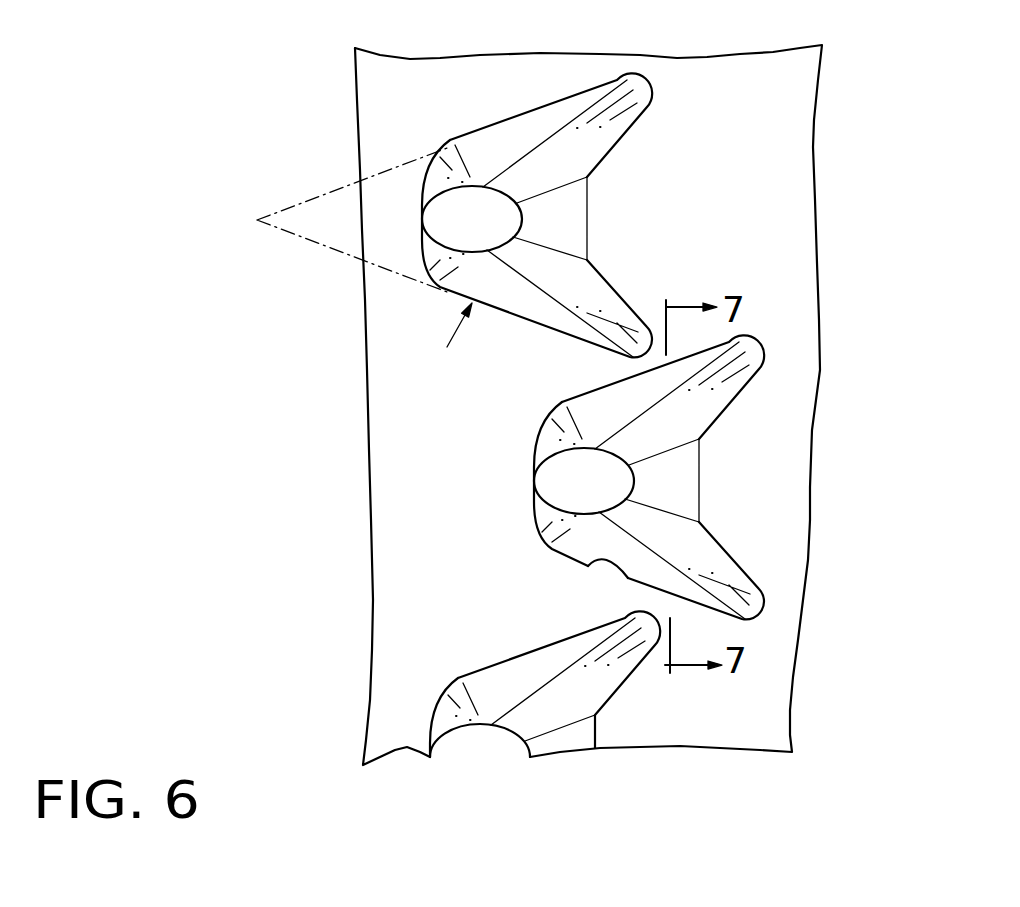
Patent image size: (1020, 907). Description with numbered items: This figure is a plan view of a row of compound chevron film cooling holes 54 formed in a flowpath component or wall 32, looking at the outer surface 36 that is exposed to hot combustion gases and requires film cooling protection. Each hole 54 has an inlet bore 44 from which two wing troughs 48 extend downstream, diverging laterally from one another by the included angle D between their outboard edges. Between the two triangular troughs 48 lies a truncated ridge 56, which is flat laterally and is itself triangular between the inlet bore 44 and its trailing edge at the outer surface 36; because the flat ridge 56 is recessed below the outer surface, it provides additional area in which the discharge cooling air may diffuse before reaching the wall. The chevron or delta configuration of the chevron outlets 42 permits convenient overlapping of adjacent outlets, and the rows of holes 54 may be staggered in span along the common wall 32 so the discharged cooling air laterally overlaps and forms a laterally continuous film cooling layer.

The wall 32 is at (813, 150).
The outer surface 36 is at (768, 103).
The inlet bore 44 is at (488, 232).
The troughs 48 is at (570, 175).
The truncated ridge 56 is at (575, 232).
The compound chevron film cooling hole 54 is at (588, 477).
The chevron outlet 42 is at (590, 564).
The included angle D is at (465, 124).